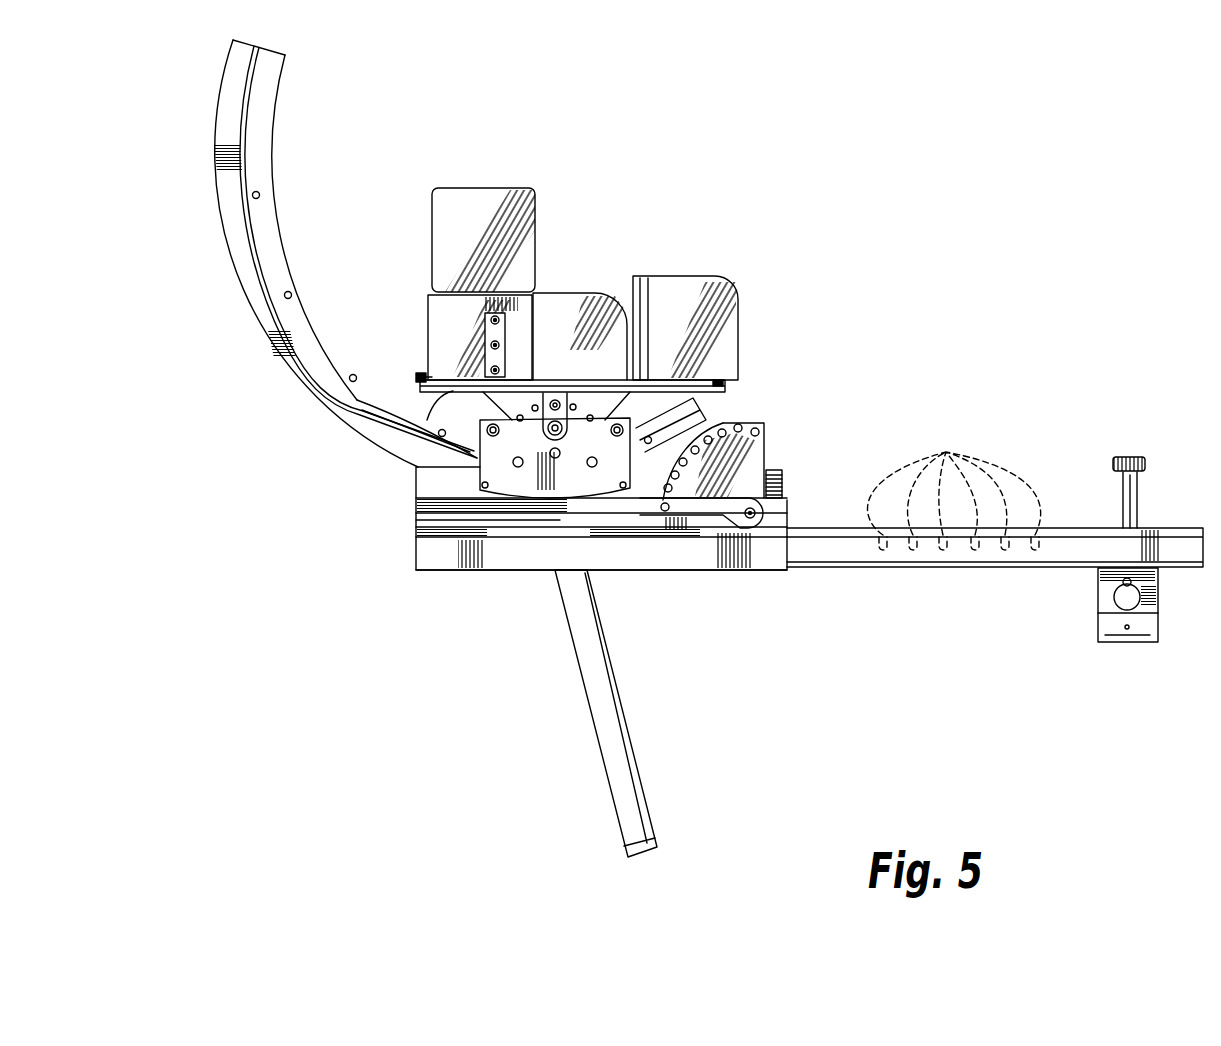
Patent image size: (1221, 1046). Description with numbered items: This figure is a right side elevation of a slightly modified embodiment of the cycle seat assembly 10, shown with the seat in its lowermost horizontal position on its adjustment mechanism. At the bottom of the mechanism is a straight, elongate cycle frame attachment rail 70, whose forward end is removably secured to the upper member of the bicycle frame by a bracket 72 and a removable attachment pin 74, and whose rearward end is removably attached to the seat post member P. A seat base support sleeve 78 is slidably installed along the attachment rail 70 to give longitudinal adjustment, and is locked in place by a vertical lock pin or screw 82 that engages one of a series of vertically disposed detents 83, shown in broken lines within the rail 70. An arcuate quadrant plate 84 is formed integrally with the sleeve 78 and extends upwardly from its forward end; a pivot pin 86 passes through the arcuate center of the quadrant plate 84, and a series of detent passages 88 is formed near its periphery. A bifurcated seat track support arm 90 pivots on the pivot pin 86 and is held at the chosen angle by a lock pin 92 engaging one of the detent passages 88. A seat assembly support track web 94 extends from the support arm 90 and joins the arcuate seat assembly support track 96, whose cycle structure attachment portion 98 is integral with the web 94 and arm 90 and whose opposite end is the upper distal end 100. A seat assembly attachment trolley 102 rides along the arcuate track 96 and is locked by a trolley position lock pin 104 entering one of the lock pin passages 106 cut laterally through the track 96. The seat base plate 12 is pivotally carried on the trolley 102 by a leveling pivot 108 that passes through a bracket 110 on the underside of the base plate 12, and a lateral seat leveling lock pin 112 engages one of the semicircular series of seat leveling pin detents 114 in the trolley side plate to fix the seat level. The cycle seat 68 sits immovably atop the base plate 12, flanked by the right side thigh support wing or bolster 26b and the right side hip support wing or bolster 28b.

The cycle seat assembly 10 is at (722, 134).
The upper distal end 100 is at (345, 253).
The arcuate seat assembly support track 96 is at (283, 240).
The base plate 12 is at (346, 342).
The lock pin passages 106 is at (350, 379).
The bracket 110 is at (390, 428).
The cycle structure attachment portion 98 is at (415, 468).
The seat assembly support track web 94 is at (415, 487).
The bifurcated seat track support arm 90 is at (415, 550).
The seat assembly attachment trolley 102 is at (437, 515).
The seat base support sleeve 78 is at (532, 571).
The cycle frame attachment rail 70 is at (975, 572).
The vertically disposed detents 83 is at (946, 447).
The bracket 72 is at (1157, 643).
The removable attachment pin 74 is at (1157, 600).
The arcuate quadrant plate 84 is at (747, 431).
The detent passages 88 is at (723, 429).
The vertical lock pin or screw 82 is at (784, 482).
The pivot pin 86 is at (756, 513).
The leveling pivot 108 is at (665, 512).
The lock pin 92 is at (680, 518).
The lateral seat leveling lock pin 112 is at (508, 498).
The trolley position lock pin 104 is at (558, 458).
The seat leveling pin detents 114 is at (589, 415).
The right side hip support wing or bolster 28b is at (483, 188).
The cycle seat 68 is at (572, 293).
The right side thigh support wing or bolster 26b is at (690, 276).
The seat post member P is at (590, 712).